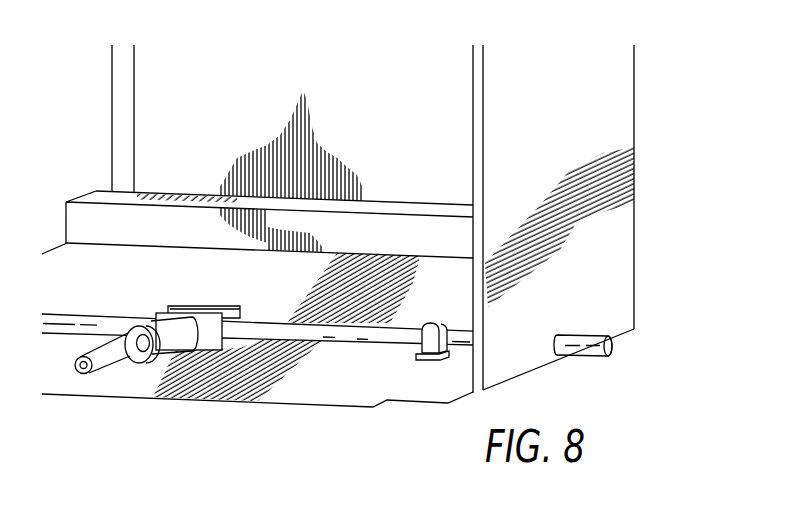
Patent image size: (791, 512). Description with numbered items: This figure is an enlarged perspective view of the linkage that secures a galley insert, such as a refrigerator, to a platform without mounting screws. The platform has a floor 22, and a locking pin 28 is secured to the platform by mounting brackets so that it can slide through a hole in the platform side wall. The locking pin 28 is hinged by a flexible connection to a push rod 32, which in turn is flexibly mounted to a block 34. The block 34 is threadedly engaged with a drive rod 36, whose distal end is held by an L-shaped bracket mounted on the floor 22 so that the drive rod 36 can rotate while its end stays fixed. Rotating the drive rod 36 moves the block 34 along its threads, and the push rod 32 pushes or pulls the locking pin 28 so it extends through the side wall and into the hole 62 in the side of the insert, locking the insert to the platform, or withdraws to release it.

The floor 22 is at (378, 385).
The locking pin 28 is at (387, 335).
The push rod 32 is at (95, 321).
The block 34 is at (160, 313).
The drive rod 36 is at (107, 357).
The hole 62 is at (557, 338).